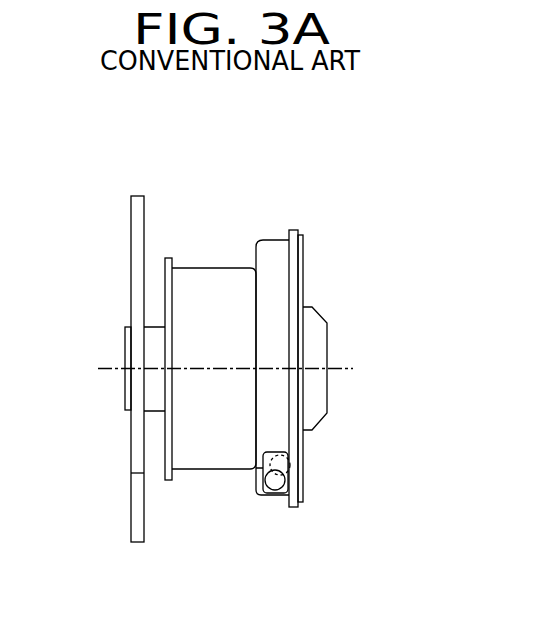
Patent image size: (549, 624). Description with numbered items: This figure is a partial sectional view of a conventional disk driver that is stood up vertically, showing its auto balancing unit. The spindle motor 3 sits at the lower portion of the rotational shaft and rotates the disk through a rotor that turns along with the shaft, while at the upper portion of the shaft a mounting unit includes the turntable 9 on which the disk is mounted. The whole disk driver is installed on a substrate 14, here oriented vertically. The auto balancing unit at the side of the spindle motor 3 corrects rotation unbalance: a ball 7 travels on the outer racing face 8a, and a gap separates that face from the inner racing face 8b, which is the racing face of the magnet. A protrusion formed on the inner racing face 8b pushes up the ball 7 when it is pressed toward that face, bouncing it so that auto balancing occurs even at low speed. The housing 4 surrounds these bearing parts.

The spindle motor 3 is at (205, 277).
The housing 4 is at (272, 246).
The turntable 9 is at (297, 270).
The substrate 14 is at (138, 448).
The ball 7 is at (270, 490).
The outer racing face 8a is at (288, 488).
The inner racing face 8b is at (265, 470).